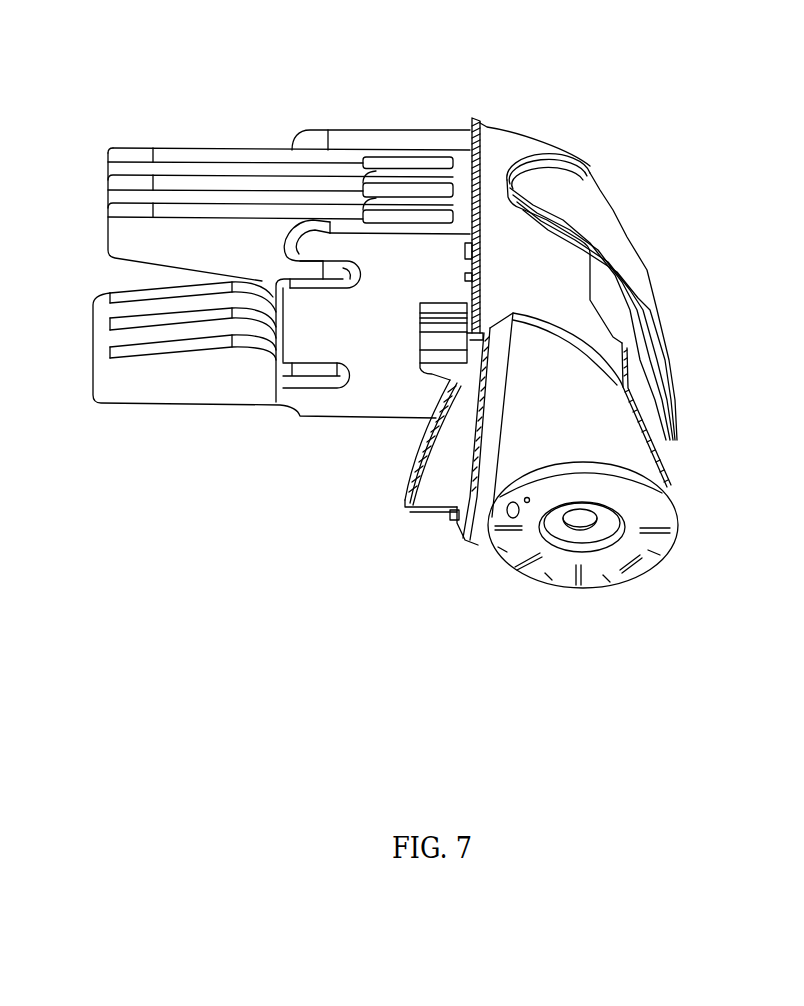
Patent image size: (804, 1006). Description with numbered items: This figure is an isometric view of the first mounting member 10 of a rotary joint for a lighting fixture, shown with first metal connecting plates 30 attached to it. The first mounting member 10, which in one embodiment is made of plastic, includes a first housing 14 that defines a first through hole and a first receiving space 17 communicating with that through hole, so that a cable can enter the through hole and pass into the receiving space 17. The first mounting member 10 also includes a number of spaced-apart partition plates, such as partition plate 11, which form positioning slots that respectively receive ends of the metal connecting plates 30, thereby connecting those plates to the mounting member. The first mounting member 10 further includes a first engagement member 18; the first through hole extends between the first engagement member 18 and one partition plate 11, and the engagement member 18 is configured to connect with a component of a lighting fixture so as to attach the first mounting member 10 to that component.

The first mounting member 10 is at (500, 240).
The partition plate 11 is at (355, 330).
The first housing 14 is at (583, 422).
The first receiving space 17 is at (574, 538).
The first engagement member 18 is at (423, 447).
The metal connecting plates 30 is at (153, 217).